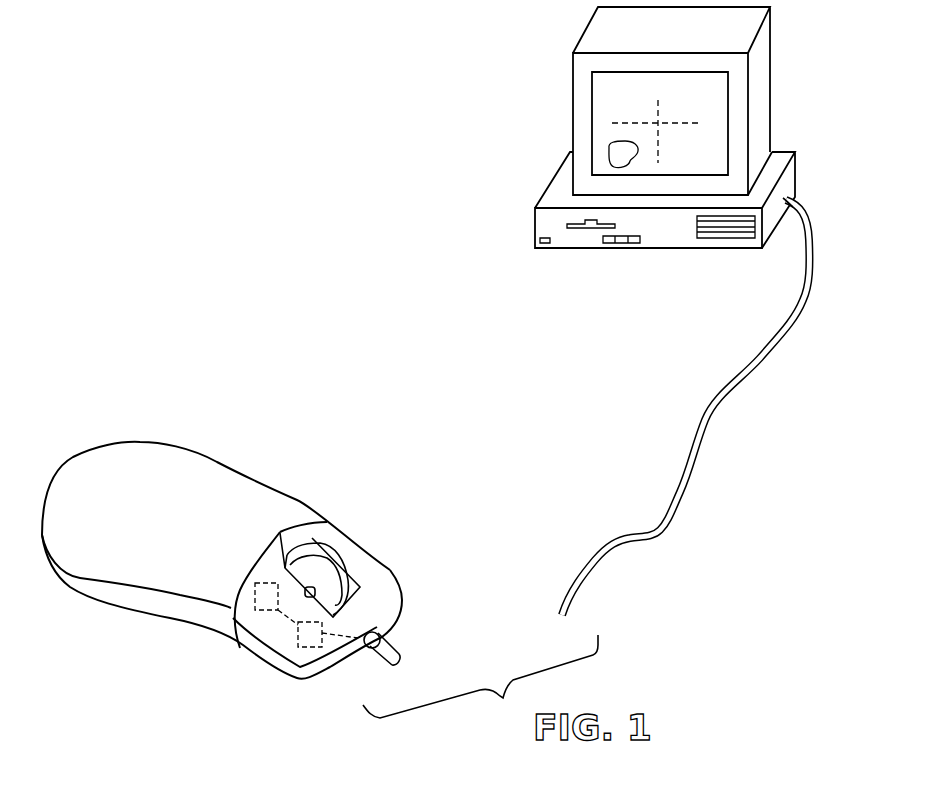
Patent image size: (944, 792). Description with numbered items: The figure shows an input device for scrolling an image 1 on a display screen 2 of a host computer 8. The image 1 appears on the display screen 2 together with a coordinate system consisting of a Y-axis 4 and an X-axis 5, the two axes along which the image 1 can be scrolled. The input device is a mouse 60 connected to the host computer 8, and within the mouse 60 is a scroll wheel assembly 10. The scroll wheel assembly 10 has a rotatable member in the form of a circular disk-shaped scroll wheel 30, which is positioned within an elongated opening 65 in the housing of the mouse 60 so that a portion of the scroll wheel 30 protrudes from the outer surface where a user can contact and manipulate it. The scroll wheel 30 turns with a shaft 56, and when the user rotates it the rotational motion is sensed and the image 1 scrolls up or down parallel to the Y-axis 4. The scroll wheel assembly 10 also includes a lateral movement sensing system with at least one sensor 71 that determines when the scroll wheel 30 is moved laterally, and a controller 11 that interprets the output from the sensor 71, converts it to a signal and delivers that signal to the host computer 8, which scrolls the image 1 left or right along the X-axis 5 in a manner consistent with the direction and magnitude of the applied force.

The image 1 is at (631, 162).
The display screen 2 is at (765, 57).
The Y-axis 4 is at (658, 89).
The X-axis 5 is at (614, 120).
The host computer 8 is at (792, 163).
The scroll wheel assembly 10 is at (354, 536).
The controller 11 is at (311, 648).
The scroll wheel 30 is at (346, 606).
The shaft 56 is at (306, 591).
The mouse 60 is at (218, 471).
The elongated opening 65 is at (357, 590).
The sensor 71 is at (256, 600).